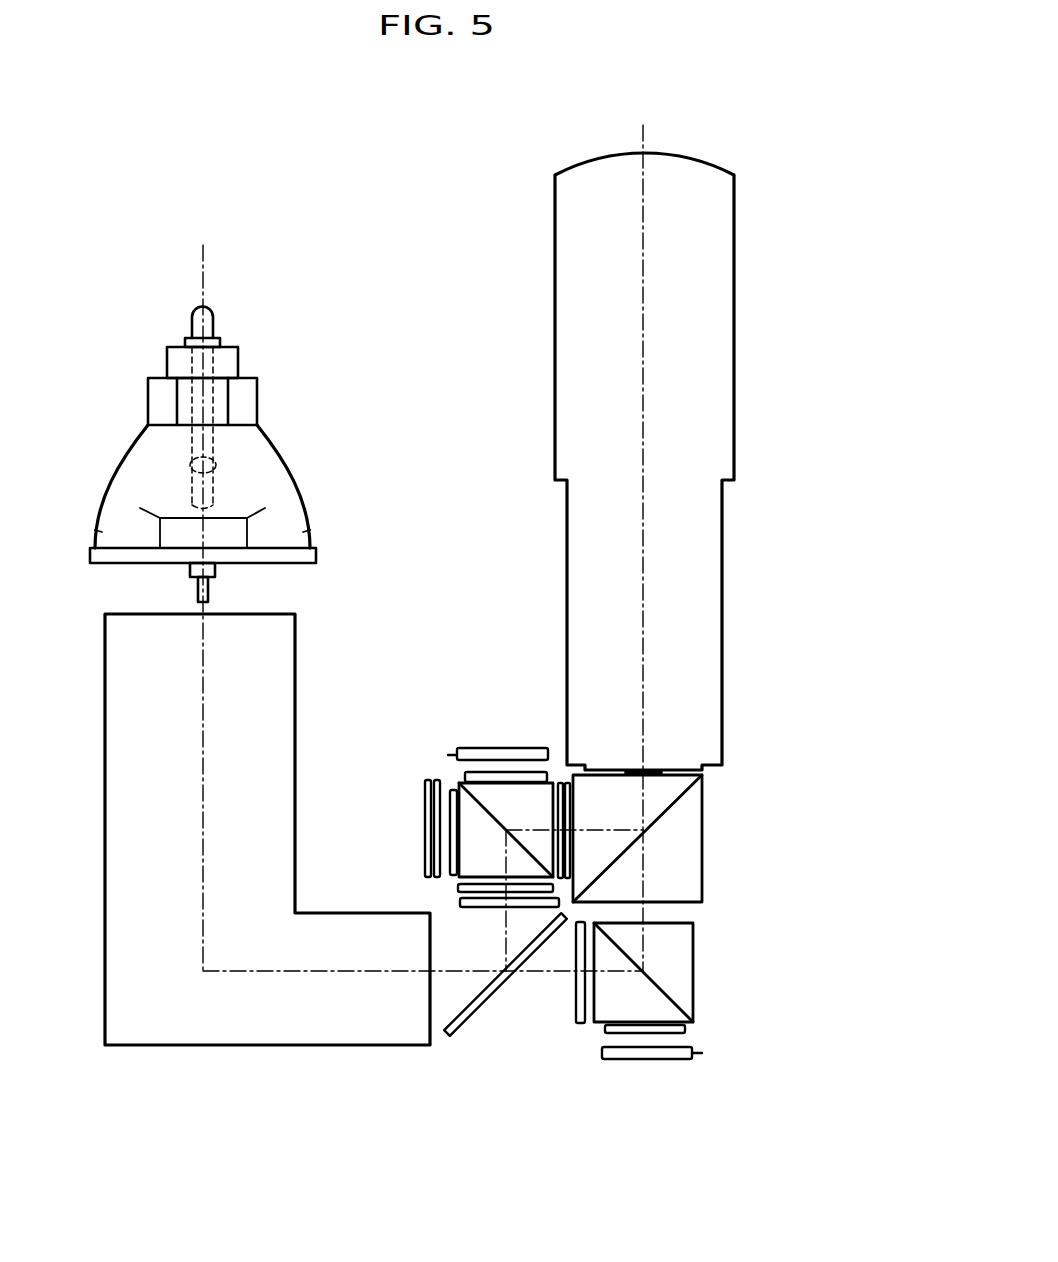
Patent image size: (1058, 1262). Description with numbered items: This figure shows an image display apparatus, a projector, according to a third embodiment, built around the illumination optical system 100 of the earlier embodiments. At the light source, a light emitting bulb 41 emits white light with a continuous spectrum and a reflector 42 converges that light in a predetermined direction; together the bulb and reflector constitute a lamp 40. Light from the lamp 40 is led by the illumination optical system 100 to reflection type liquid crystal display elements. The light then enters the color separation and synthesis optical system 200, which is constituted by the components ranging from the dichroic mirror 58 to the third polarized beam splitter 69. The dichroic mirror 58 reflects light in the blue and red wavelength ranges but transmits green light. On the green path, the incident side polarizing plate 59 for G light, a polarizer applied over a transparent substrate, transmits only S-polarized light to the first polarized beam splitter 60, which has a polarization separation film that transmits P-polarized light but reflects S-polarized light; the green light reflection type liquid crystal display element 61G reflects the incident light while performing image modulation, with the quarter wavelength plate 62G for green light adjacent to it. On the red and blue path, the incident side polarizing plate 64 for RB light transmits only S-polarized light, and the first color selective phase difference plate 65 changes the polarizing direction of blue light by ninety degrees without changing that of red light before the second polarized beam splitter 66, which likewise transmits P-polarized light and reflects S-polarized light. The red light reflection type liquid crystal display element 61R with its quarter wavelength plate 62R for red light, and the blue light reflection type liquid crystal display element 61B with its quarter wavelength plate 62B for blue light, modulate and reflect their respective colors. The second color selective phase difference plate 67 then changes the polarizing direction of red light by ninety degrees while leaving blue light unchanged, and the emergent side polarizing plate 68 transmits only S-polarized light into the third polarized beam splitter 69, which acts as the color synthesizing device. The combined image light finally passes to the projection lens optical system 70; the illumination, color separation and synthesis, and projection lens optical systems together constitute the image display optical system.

The lamp 40 is at (223, 455).
The light emitting bulb 41 is at (190, 463).
The reflector 42 is at (305, 500).
The projection lens optical system 70 is at (735, 200).
The illumination optical system 100 is at (323, 682).
The color separation and synthesis optical system 200 is at (770, 862).
The third polarized beam splitter 69 is at (703, 794).
The first polarized beam splitter 60 is at (695, 965).
The dichroic mirror 58 is at (461, 1031).
The incident side polarizing plate for G light 59 is at (576, 1024).
The ¼ wavelength plate for green light 62G is at (688, 1032).
The green light reflection type liquid crystal display element 61G is at (648, 1061).
The blue light reflection type liquid crystal display element 61B is at (490, 747).
The ¼ wavelength plate for blue light 62B is at (464, 772).
The second polarized beam splitter 66 is at (452, 788).
The ¼ wavelength plate for red light 62R is at (432, 780).
The red light reflection type liquid crystal display element 61R is at (425, 810).
The first color selective phase difference plate 65 is at (458, 886).
The incident side polarizing plate for RB light 64 is at (460, 903).
The second color selective phase difference plate 67 is at (559, 783).
The emergent side polarizing plate 68 is at (567, 783).